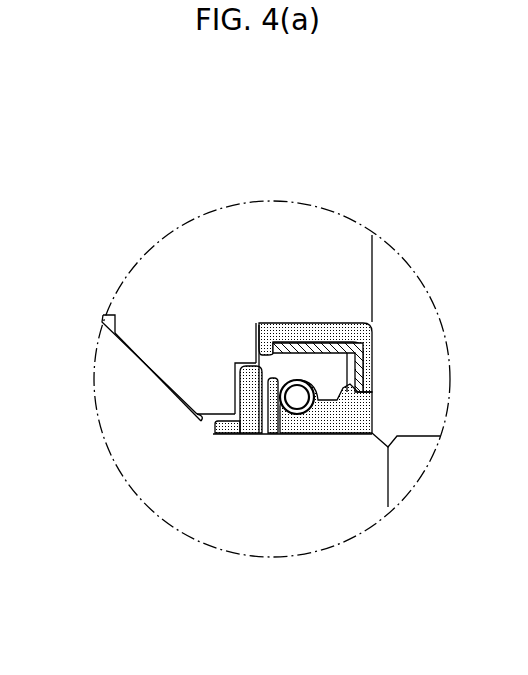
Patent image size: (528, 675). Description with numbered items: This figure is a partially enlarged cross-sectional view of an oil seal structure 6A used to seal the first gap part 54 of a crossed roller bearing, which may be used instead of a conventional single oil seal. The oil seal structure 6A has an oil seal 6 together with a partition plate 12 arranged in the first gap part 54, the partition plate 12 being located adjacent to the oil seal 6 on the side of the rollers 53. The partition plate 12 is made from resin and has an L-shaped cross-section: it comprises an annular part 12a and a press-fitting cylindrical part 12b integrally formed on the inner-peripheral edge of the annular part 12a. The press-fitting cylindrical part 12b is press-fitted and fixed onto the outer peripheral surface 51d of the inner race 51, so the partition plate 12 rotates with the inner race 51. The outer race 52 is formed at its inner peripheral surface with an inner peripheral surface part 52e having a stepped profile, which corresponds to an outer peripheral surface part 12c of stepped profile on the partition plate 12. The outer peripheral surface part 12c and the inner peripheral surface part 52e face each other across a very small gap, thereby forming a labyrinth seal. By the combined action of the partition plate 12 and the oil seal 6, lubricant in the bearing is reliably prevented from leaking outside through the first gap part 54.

The oil seal 6 is at (379, 325).
The oil seal structure 6A is at (378, 336).
The partition plate 12 is at (175, 405).
The annular part 12a is at (287, 441).
The press-fitting cylindrical part 12b is at (210, 437).
The outer peripheral surface part 12c is at (234, 395).
The inner race 51 is at (326, 537).
The outer peripheral surface 51d is at (297, 438).
The outer race 52 is at (255, 250).
The inner peripheral surface part 52e is at (250, 362).
The rollers 53 is at (118, 466).
The first gap part 54 is at (207, 424).